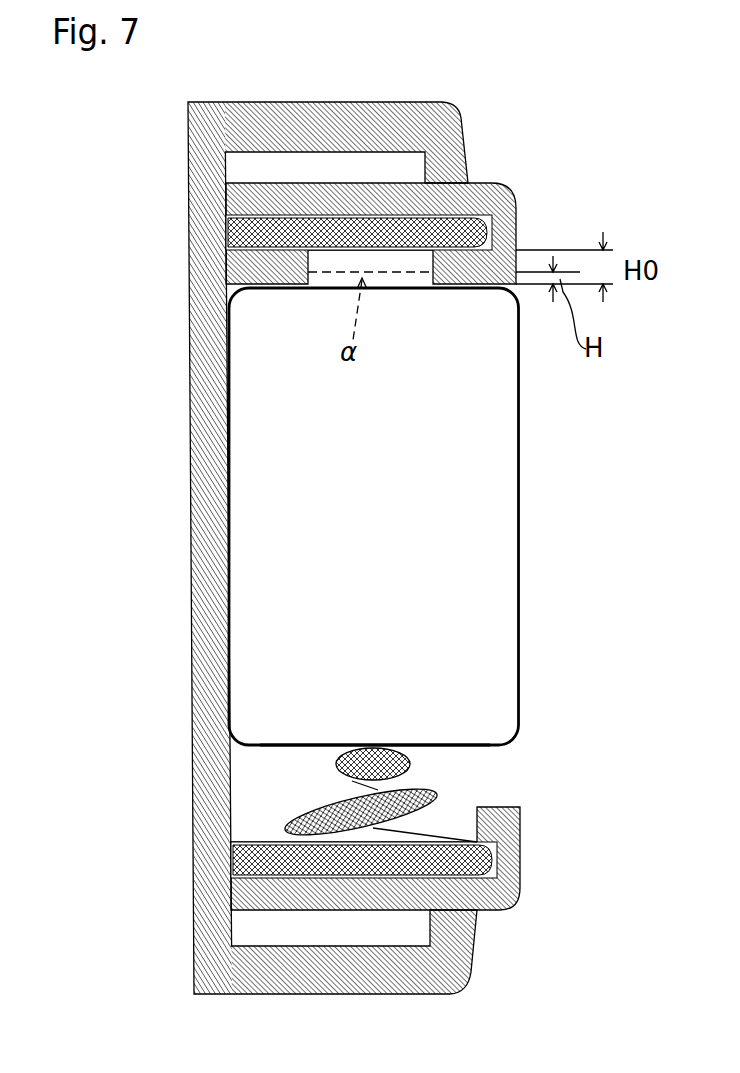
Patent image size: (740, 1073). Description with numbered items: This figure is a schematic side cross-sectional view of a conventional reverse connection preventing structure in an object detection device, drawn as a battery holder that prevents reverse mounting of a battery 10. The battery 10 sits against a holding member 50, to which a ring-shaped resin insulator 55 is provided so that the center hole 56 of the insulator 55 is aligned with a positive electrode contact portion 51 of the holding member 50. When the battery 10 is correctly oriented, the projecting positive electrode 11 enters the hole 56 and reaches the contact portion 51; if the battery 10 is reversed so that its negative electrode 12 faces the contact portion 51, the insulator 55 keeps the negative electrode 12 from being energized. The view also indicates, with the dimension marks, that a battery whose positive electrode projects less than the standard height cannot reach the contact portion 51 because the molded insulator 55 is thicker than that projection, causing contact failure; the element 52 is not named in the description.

The battery 10 is at (518, 457).
The projecting positive electrode 11 is at (220, 241).
The negative electrode 12 is at (443, 748).
The holding member 50 is at (376, 788).
The positive electrode contact portion 51 is at (441, 214).
The coil spring 52 is at (368, 747).
The ring-shaped resin insulator 55 is at (267, 272).
The center hole 56 is at (424, 283).